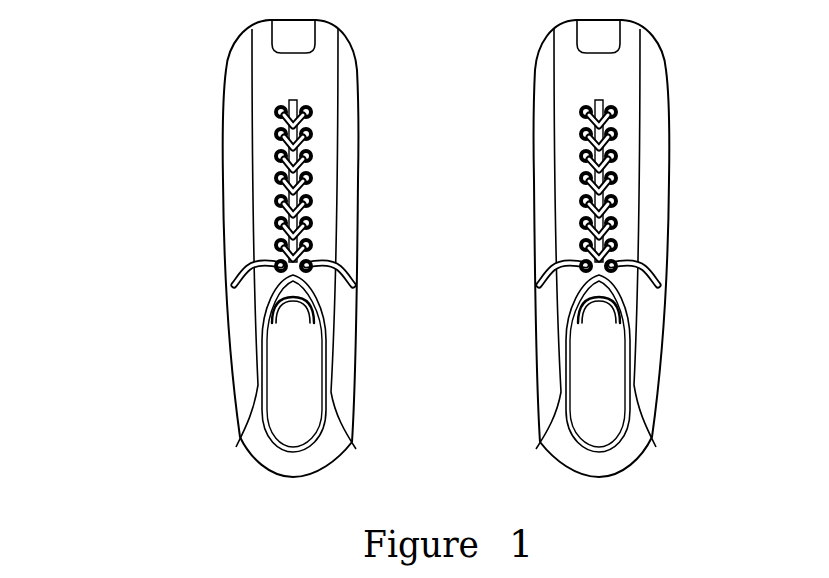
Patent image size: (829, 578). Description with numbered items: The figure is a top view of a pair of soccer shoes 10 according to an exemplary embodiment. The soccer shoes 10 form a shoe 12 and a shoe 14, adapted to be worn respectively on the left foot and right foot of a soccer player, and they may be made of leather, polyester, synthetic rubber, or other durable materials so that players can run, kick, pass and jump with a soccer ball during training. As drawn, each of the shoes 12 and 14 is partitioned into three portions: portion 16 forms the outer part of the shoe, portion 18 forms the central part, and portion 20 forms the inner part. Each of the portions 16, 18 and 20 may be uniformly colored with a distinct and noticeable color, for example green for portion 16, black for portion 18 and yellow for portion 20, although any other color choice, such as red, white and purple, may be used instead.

The soccer shoes 10 is at (138, 38).
The shoe 12 is at (263, 452).
The shoe 14 is at (568, 452).
The portion 16 is at (238, 98).
The portion 18 is at (323, 55).
The portion 20 is at (352, 115).